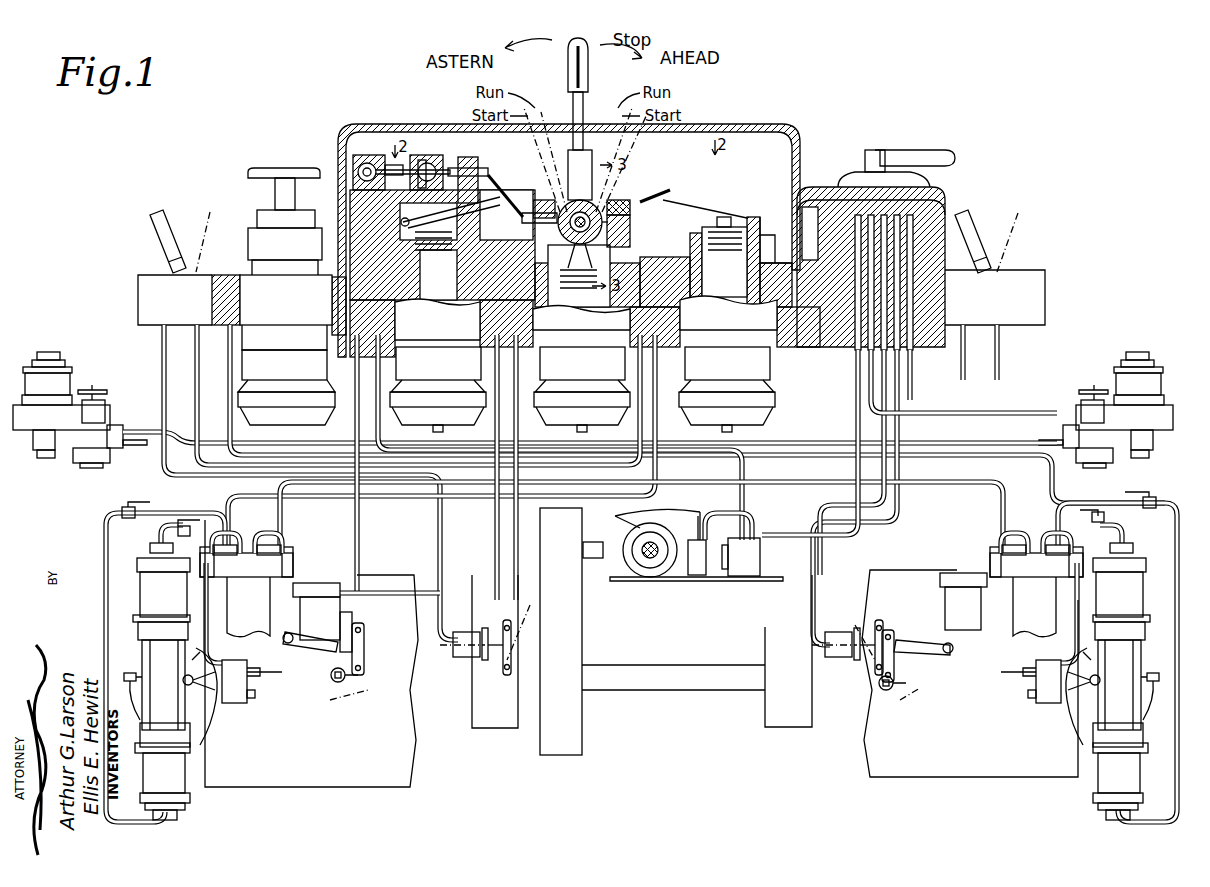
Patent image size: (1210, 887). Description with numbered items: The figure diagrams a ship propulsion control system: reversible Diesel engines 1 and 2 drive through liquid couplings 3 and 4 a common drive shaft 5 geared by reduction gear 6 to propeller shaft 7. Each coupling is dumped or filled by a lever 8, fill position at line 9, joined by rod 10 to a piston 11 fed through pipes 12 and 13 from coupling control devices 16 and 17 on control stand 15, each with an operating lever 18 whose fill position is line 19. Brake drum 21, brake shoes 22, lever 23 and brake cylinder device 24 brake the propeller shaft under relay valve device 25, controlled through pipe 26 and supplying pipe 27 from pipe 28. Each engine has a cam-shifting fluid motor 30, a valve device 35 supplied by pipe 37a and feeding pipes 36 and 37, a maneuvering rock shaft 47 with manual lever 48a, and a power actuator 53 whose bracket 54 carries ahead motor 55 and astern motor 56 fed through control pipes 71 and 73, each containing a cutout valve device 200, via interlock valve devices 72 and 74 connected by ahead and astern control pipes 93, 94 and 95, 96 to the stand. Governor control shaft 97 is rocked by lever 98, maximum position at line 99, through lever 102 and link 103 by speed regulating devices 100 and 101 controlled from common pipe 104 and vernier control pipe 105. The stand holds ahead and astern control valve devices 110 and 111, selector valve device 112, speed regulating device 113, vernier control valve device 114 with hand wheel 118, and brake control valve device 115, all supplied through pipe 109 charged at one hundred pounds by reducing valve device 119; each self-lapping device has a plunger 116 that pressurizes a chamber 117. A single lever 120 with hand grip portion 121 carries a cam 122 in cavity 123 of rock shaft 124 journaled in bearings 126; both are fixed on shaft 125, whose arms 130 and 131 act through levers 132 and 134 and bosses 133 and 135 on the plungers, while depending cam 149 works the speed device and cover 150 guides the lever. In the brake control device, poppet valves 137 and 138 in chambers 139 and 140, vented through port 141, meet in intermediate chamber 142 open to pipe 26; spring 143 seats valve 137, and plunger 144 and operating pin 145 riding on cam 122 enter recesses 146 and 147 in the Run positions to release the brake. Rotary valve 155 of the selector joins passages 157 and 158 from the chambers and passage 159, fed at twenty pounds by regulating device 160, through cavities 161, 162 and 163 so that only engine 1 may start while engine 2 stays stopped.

The reversible engine 1 is at (345, 780).
The reversible engine 2 is at (950, 770).
The liquid coupling 3 is at (500, 722).
The liquid coupling 4 is at (780, 728).
The common drive shaft 5 is at (650, 680).
The reduction gear 6 is at (565, 626).
The propeller shaft 7 is at (648, 580).
The lever 8 is at (506, 620).
The dot and dash line 9 is at (691, 628).
The rod 10 is at (668, 671).
The piston 11 is at (840, 657).
The pipe 12 is at (900, 540).
The pipe 13 is at (862, 540).
The operator's control stand 15 is at (1030, 300).
The coupling control device 16 is at (138, 280).
The coupling control device 17 is at (1020, 275).
The operating lever 18 is at (962, 222).
The dot and dash line 19 is at (1032, 205).
The brake drum 21 is at (645, 572).
The friction brake shoes 22 is at (668, 575).
The lever 23 is at (630, 508).
The brake cylinder device 24 is at (697, 577).
The relay valve device 25 is at (742, 577).
The pipe 26 is at (746, 455).
The pipe 27 is at (752, 517).
The pipe 28 is at (795, 537).
The fluid motor 30 is at (641, 607).
The valve device 35 is at (1035, 693).
The pipe 36 is at (990, 555).
The pipe 37 is at (1058, 703).
The pipe 37a is at (1030, 672).
The rock shaft 47 is at (1100, 680).
The manually operable lever 48a is at (1152, 672).
The power actuator 53 is at (1145, 692).
The bracket 54 is at (1078, 725).
The ahead motor 55 is at (1143, 548).
The astern motor 56 is at (1140, 792).
The ahead control pipe 71 is at (1124, 522).
The interlock valve device 72 is at (641, 556).
The astern control pipe 73 is at (1118, 812).
The interlock valve device 74 is at (641, 556).
The ahead control pipe 93 is at (222, 502).
The astern control pipe 94 is at (300, 490).
The ahead control pipe 95 is at (1046, 468).
The astern control pipe 96 is at (1005, 500).
The governor control shaft 97 is at (886, 676).
The lever 98 is at (910, 680).
The dot and dash line 99 is at (625, 700).
The speed regulating device 100 is at (345, 610).
The speed regulating device 101 is at (955, 605).
The lever 102 is at (950, 650).
The link 103 is at (365, 652).
The fluid pressure control pipe 104 is at (502, 467).
The vernier control pipe 105 is at (358, 535).
The supply pipe 109 is at (470, 442).
The ahead control valve device 110 is at (438, 389).
The astern control valve device 111 is at (727, 389).
The selector valve device 112 is at (900, 175).
The speed regulating device 113 is at (582, 389).
The vernier control valve device 114 is at (286, 350).
The valve device 115 is at (365, 170).
The plunger 116 is at (740, 210).
The chamber 117 is at (590, 320).
The hand wheel 118 is at (268, 170).
The reducing valve device 119 is at (50, 365).
The manually operable lever 120 is at (588, 78).
The hand grip portion 121 is at (566, 68).
The cam 122 is at (585, 208).
The cavity 123 is at (618, 200).
The rock shaft 124 is at (612, 210).
The shaft 125 is at (610, 220).
The bearings 126 is at (545, 248).
The arm 130 is at (527, 212).
The arm 131 is at (672, 188).
The lever 132 is at (455, 210).
The boss 133 is at (455, 218).
The lever 134 is at (690, 203).
The boss 135 is at (725, 217).
The poppet valve 137 is at (360, 165).
The poppet valve 138 is at (418, 160).
The chamber 139 is at (346, 205).
The chamber 140 is at (428, 163).
The port 141 is at (506, 187).
The intermediate chamber 142 is at (390, 165).
The spring 143 is at (352, 175).
The plunger 144 is at (440, 168).
The operating pin 145 is at (480, 170).
The recess 146 is at (535, 196).
The recess 147 is at (550, 212).
The depending cam 149 is at (600, 252).
The cover 150 is at (772, 124).
The rotary valve 155 is at (925, 187).
The passage 157 is at (777, 240).
The passage 158 is at (765, 275).
The passage 159 is at (885, 362).
The regulating device 160 is at (1108, 375).
The cavity 161 is at (880, 190).
The cavity 162 is at (938, 200).
The cavity 163 is at (860, 190).
The cutout valve device 200 is at (1158, 500).